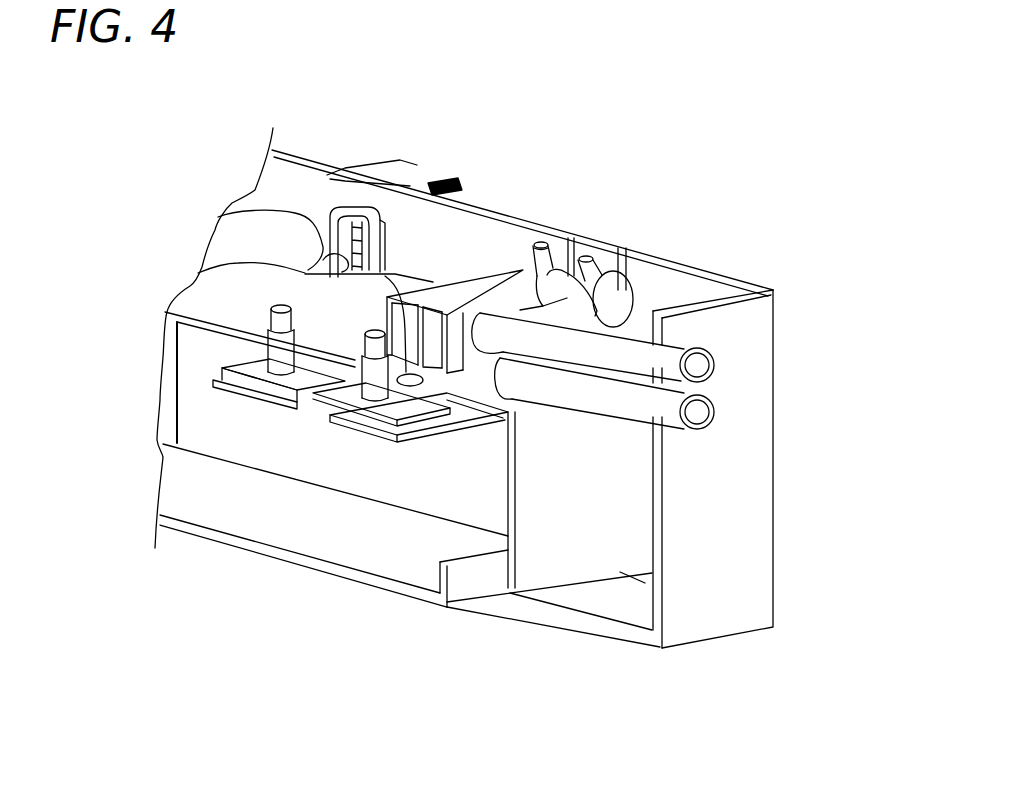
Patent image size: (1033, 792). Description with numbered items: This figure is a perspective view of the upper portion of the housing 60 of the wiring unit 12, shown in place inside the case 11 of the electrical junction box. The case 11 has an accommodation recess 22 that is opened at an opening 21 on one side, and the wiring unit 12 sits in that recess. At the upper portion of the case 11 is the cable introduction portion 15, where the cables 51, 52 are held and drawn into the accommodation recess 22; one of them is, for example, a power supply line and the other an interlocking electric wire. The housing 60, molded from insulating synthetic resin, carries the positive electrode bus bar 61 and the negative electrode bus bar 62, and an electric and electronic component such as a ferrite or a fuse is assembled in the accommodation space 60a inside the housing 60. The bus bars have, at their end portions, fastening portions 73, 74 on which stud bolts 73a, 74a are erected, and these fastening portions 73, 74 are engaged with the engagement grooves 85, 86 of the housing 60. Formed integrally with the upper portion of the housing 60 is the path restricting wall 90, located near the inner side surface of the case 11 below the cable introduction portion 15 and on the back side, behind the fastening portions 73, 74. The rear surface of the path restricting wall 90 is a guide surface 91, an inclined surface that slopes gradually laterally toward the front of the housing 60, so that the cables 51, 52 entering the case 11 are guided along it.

The case 11 is at (563, 419).
The wiring unit 12 is at (540, 557).
The cable introduction portion 15 is at (560, 245).
The opening 21 is at (631, 608).
The accommodation recess 22 is at (694, 290).
The cable 51 is at (620, 393).
The cable 52 is at (608, 340).
The housing 60 is at (331, 350).
The accommodation space 60a is at (241, 510).
The positive electrode bus bar 61 is at (256, 342).
The negative electrode bus bar 62 is at (419, 403).
The fastening portion 73 is at (253, 368).
The stud bolt 73a is at (277, 352).
The fastening portion 74 is at (345, 397).
The stud bolt 74a is at (372, 386).
The engagement groove 85 is at (330, 253).
The engagement groove 86 is at (404, 370).
The path restricting wall 90 is at (455, 252).
The guide surface 91 is at (500, 302).